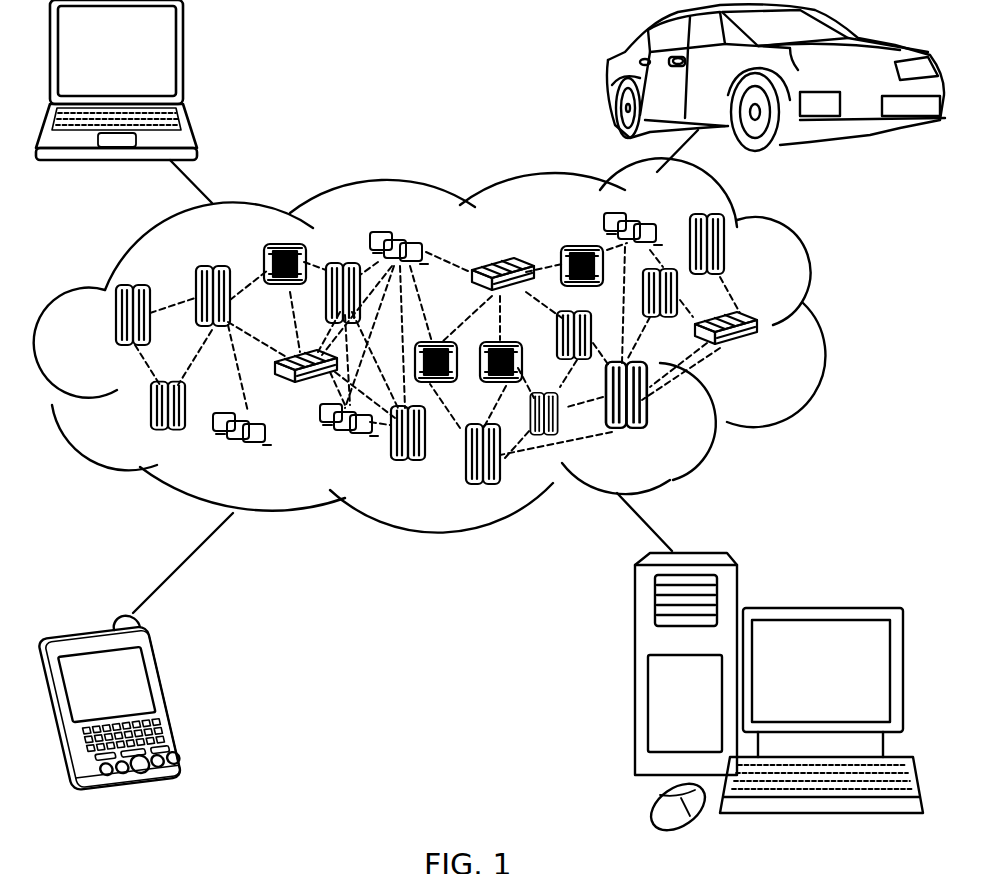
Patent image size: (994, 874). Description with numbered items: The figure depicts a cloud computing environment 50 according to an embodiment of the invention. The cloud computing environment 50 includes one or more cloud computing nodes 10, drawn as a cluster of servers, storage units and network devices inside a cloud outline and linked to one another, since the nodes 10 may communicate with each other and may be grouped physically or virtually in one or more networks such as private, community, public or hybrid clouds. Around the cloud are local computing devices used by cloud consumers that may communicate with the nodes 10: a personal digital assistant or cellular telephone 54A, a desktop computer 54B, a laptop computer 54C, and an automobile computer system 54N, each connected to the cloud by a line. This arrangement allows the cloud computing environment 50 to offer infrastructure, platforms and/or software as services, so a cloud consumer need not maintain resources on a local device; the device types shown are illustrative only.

The cloud computing nodes 10 is at (770, 358).
The cloud computing environment 50 is at (823, 327).
The personal digital assistant (PDA) or cellular telephone 54A is at (172, 697).
The desktop computer 54B is at (820, 607).
The laptop computer 54C is at (185, 60).
The automobile computer system 54N is at (612, 80).